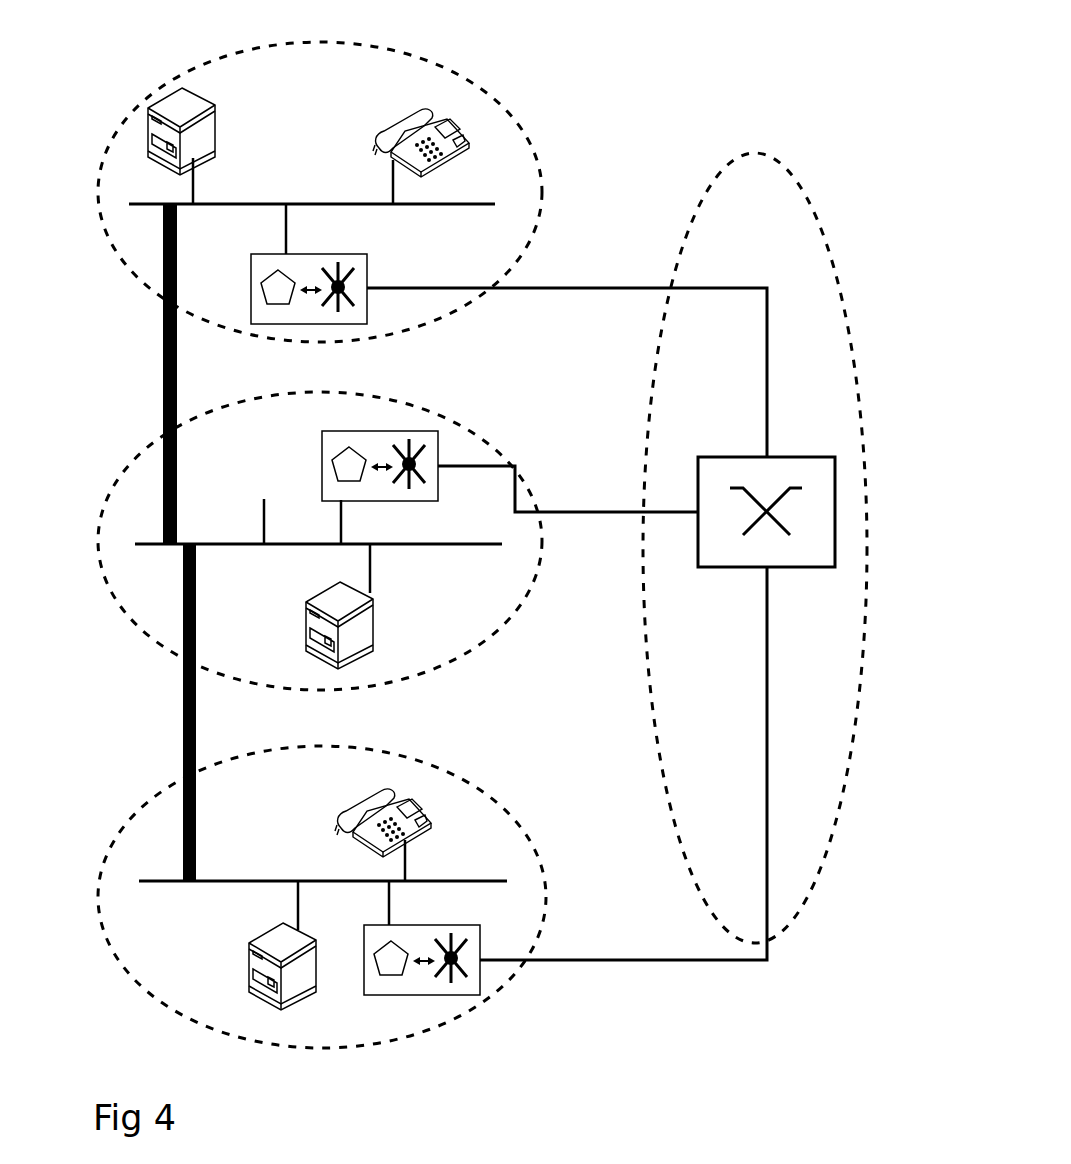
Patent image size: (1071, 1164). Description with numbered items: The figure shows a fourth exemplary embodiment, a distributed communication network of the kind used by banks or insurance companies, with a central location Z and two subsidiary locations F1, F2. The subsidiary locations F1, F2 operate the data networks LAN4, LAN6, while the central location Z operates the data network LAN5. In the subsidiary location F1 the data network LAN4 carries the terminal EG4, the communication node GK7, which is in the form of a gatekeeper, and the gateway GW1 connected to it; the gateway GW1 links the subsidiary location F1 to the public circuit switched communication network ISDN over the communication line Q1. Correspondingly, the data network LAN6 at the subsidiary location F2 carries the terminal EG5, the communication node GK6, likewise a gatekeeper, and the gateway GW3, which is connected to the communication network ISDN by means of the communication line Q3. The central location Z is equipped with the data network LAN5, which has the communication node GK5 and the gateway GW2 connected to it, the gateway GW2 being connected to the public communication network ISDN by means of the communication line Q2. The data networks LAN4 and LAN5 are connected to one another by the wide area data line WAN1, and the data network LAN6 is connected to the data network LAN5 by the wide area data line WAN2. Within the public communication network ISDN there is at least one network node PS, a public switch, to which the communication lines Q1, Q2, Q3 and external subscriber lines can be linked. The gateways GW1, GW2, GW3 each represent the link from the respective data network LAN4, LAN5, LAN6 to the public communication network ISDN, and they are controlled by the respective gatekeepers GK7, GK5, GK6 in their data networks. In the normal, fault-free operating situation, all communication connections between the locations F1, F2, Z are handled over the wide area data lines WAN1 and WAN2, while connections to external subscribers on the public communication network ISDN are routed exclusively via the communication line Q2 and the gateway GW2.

The data network LAN4 is at (138, 203).
The data network LAN5 is at (143, 542).
The data network LAN6 is at (149, 879).
The wide area data line WAN1 is at (163, 385).
The wide area data line WAN2 is at (181, 733).
The subsidiary location F1 is at (255, 64).
The subsidiary location F2 is at (272, 762).
The central location Z is at (270, 405).
The communication node GK7 is at (213, 122).
The communication node GK5 is at (373, 613).
The communication node GK6 is at (273, 938).
The terminal EG4 is at (398, 127).
The terminal EG5 is at (367, 807).
The gateway GW1 is at (360, 263).
The gateway GW2 is at (430, 440).
The gateway GW3 is at (373, 982).
The communication line Q1 is at (607, 292).
The communication line Q2 is at (560, 512).
The communication line Q3 is at (630, 963).
The public circuit switched communication network ISDN is at (747, 175).
The network node PS is at (727, 558).